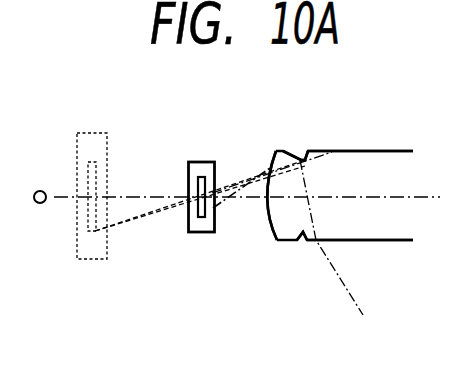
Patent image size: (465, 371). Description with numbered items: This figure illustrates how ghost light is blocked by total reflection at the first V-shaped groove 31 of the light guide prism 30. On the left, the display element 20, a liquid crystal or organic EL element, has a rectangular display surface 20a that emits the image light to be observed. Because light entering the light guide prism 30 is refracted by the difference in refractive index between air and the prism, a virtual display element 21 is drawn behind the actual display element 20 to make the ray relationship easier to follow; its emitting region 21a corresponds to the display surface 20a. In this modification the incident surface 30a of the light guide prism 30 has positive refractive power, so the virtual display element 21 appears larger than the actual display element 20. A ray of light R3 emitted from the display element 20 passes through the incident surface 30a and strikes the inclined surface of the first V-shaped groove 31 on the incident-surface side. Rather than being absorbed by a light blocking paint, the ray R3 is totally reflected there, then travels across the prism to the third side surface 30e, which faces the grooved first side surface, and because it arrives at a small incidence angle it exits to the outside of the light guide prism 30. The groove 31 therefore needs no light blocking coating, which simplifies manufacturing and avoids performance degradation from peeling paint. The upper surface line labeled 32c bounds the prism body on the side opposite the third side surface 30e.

The virtual display element 21 is at (77, 148).
The light emitting point 21a is at (88, 213).
The display element 20 is at (188, 170).
The display surface 20a is at (198, 211).
The light guide prism 30 is at (405, 227).
The incident surface 30a is at (268, 226).
The third side surface 30e is at (387, 241).
The top surface of lens 32c is at (367, 151).
The first V-shaped groove 31 is at (295, 151).
The ray of light R3 is at (355, 297).